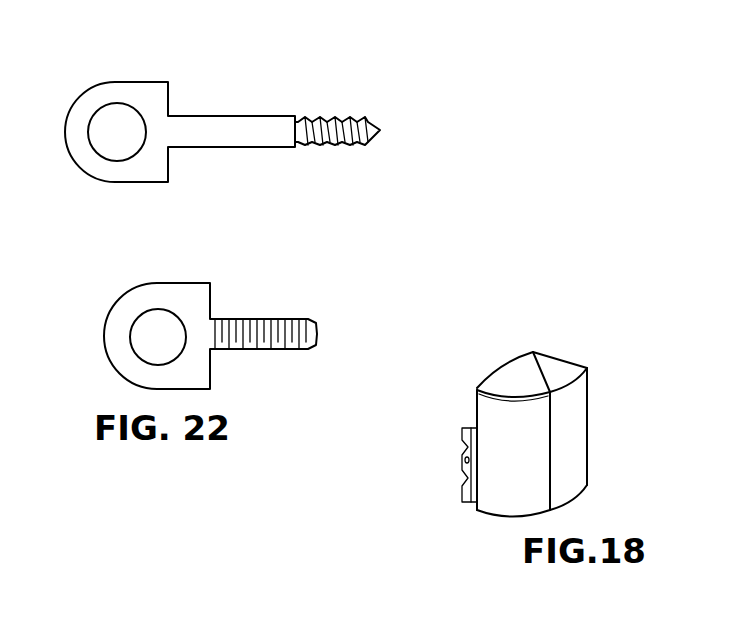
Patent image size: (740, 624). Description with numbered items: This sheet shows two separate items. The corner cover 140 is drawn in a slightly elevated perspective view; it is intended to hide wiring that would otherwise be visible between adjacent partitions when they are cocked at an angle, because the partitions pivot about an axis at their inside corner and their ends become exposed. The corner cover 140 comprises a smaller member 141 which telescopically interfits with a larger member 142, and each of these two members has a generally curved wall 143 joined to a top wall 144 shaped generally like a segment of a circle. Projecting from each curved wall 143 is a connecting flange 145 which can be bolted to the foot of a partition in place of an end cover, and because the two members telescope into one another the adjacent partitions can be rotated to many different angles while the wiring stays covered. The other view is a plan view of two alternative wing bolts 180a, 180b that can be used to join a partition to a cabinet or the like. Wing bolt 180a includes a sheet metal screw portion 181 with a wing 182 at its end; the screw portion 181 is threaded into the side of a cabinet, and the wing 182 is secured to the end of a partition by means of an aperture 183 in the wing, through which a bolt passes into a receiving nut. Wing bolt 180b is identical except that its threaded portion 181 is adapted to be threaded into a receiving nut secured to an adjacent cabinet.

In FIG. 22, the wing bolt 180a is at (210, 116).
In FIG. 22, the wing bolt 180b is at (215, 318).
In FIG. 22, the sheet metal screw portion 181 is at (318, 117).
In FIG. 22, the wing 182 is at (122, 87).
In FIG. 22, the aperture 183 is at (107, 140).
In FIG. 18, the corner cover 140 is at (528, 434).
In FIG. 18, the smaller member 141 is at (572, 422).
In FIG. 18, the larger member 142 is at (495, 497).
In FIG. 18, the curved wall 143 is at (528, 452).
In FIG. 18, the top wall 144 is at (500, 373).
In FIG. 18, the connecting flange 145 is at (464, 461).